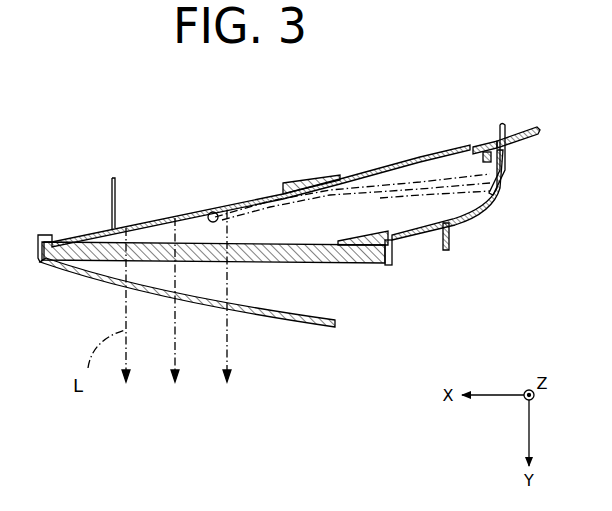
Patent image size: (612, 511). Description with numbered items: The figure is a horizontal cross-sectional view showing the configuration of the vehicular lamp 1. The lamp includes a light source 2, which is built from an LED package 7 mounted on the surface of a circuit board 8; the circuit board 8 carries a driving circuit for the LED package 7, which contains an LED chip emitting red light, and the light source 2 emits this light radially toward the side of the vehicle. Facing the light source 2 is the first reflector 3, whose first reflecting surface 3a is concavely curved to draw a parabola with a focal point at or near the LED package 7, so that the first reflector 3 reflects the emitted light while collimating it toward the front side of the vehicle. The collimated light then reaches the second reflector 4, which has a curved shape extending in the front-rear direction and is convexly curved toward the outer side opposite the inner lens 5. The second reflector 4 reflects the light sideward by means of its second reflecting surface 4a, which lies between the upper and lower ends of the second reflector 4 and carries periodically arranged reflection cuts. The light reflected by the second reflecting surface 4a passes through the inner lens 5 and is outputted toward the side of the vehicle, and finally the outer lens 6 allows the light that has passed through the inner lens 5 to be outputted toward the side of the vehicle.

The vehicular lamp 1 is at (68, 87).
The light source 2 is at (515, 64).
The first reflector 3 is at (490, 200).
The first reflecting surface 3a is at (455, 208).
The second reflector 4 is at (202, 208).
The second reflecting surface 4a is at (217, 214).
The inner lens 5 is at (364, 270).
The outer lens 6 is at (263, 323).
The LED package 7 is at (492, 142).
The circuit board 8 is at (478, 146).